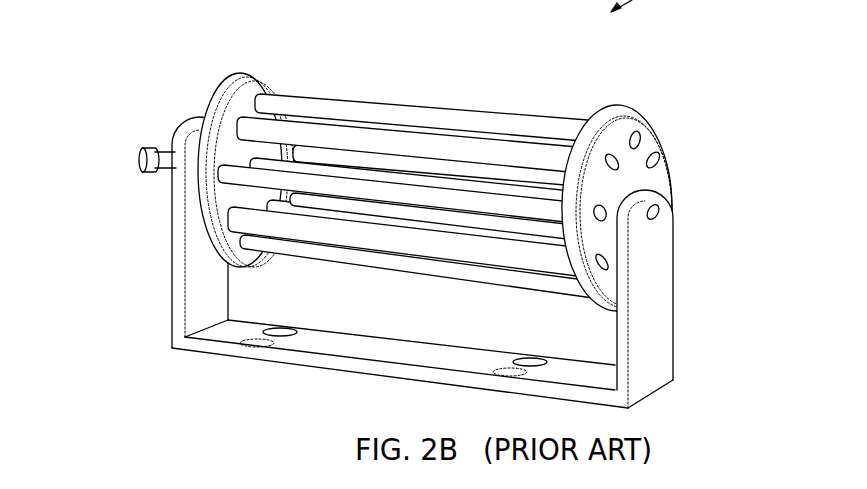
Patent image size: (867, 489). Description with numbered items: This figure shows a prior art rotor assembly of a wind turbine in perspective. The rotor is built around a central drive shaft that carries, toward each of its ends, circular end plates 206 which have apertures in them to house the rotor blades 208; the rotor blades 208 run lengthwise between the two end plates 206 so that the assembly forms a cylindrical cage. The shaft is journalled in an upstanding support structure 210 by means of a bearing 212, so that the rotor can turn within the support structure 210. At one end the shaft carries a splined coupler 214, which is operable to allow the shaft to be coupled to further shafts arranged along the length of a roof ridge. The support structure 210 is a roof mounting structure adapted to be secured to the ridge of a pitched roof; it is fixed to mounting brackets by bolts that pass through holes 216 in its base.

The circular end plates 206 is at (248, 73).
The rotor blades 208 is at (400, 102).
The upstanding support structure 210 is at (675, 292).
The bearing 212 is at (658, 211).
The splined coupler 214 is at (140, 150).
The holes 216 is at (280, 338).